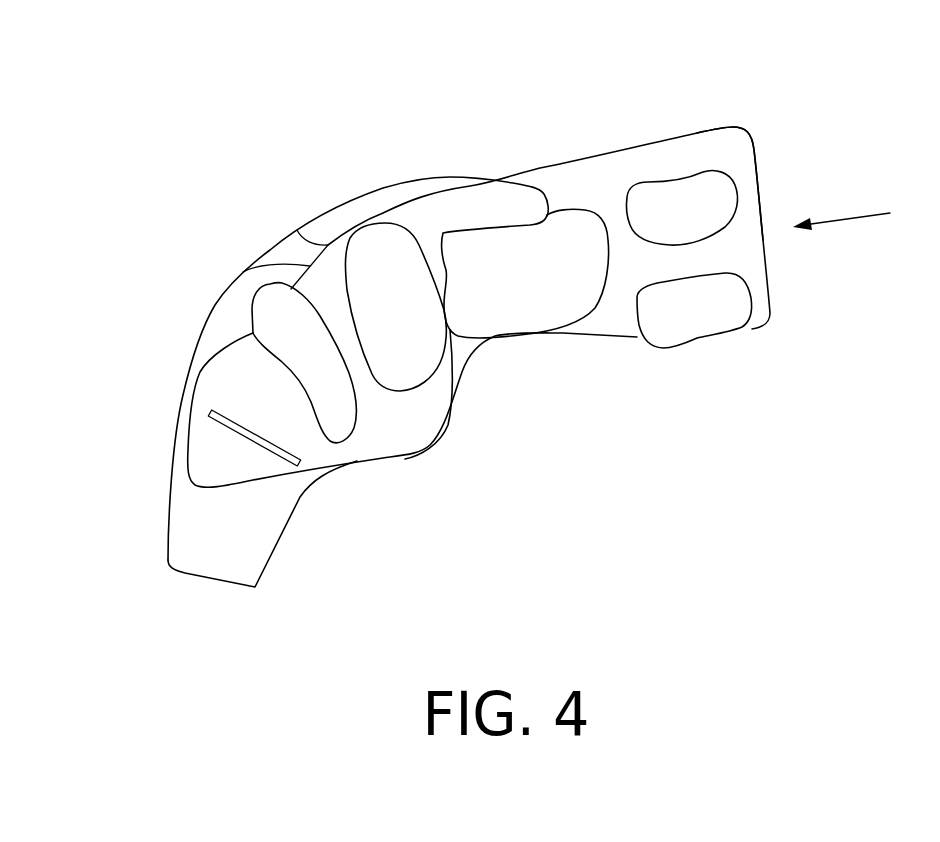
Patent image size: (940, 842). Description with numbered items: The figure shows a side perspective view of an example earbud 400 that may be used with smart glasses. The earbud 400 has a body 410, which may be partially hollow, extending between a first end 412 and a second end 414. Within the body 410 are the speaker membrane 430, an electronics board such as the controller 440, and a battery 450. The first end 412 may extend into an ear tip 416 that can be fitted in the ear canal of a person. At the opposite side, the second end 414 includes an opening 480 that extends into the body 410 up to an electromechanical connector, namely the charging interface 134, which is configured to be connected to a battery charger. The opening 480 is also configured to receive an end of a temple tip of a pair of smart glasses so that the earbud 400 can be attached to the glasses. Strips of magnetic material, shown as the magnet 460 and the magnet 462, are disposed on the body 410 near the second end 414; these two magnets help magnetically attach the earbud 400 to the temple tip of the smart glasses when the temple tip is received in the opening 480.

The earbud 400 is at (463, 648).
The body 410 is at (455, 162).
The first end 412 is at (208, 578).
The second end 414 is at (733, 127).
The ear tip 416 is at (190, 503).
The speaker membrane 430 is at (285, 317).
The controller 440 is at (383, 253).
The battery 450 is at (545, 260).
The magnet 460 is at (672, 195).
The magnet 462 is at (688, 318).
The charging interface 134 is at (292, 467).
The opening 480 is at (864, 214).